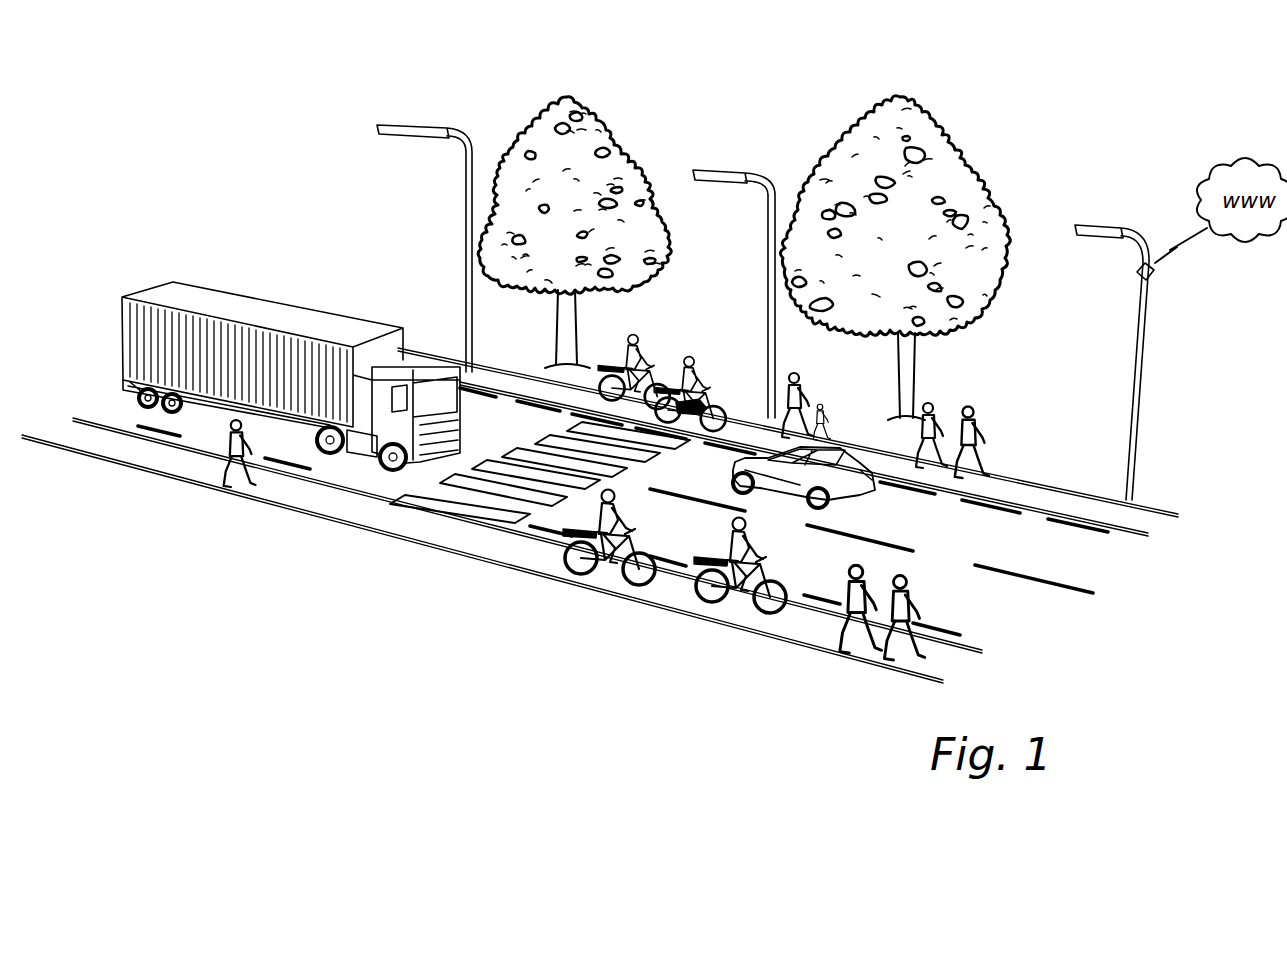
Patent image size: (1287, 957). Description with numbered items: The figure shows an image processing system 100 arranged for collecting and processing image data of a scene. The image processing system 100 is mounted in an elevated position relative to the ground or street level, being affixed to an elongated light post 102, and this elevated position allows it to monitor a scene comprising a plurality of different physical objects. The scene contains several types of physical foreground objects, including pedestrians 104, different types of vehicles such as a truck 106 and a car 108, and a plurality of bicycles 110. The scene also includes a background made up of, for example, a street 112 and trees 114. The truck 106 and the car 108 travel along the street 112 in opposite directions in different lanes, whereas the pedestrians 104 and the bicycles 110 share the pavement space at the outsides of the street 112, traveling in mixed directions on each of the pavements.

The image processing system 100 is at (1150, 275).
The elongated light post 102 is at (450, 128).
The pedestrians 104 is at (800, 370).
The truck 106 is at (290, 300).
The car 108 is at (870, 488).
The bicycles 110 is at (636, 345).
The street 112 is at (1100, 571).
The trees 114 is at (585, 122).